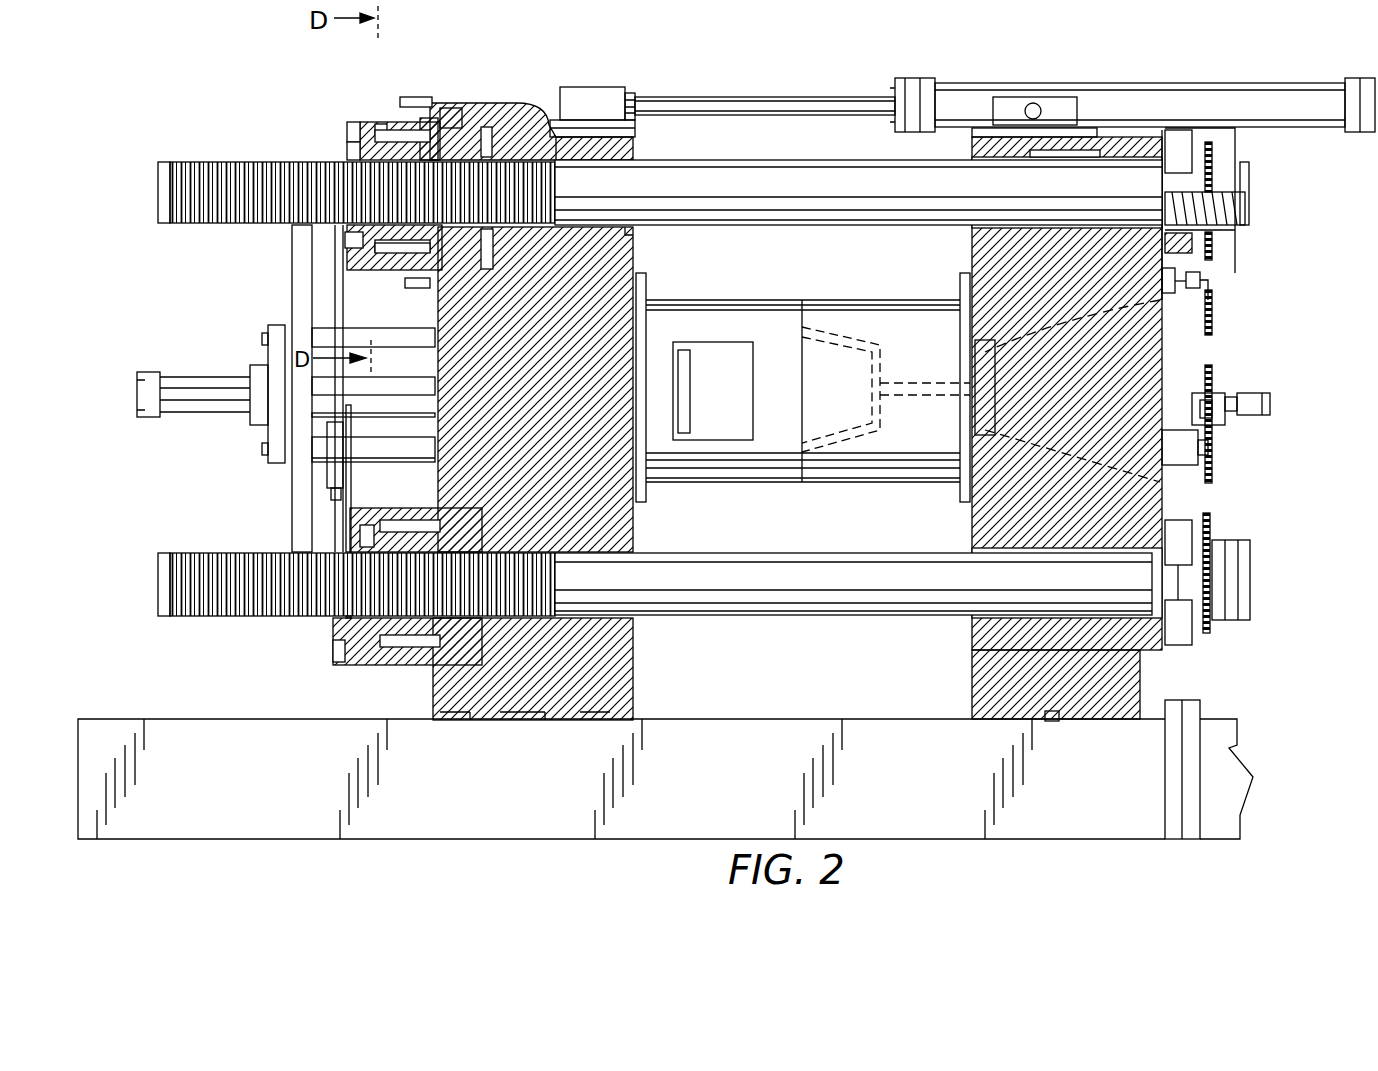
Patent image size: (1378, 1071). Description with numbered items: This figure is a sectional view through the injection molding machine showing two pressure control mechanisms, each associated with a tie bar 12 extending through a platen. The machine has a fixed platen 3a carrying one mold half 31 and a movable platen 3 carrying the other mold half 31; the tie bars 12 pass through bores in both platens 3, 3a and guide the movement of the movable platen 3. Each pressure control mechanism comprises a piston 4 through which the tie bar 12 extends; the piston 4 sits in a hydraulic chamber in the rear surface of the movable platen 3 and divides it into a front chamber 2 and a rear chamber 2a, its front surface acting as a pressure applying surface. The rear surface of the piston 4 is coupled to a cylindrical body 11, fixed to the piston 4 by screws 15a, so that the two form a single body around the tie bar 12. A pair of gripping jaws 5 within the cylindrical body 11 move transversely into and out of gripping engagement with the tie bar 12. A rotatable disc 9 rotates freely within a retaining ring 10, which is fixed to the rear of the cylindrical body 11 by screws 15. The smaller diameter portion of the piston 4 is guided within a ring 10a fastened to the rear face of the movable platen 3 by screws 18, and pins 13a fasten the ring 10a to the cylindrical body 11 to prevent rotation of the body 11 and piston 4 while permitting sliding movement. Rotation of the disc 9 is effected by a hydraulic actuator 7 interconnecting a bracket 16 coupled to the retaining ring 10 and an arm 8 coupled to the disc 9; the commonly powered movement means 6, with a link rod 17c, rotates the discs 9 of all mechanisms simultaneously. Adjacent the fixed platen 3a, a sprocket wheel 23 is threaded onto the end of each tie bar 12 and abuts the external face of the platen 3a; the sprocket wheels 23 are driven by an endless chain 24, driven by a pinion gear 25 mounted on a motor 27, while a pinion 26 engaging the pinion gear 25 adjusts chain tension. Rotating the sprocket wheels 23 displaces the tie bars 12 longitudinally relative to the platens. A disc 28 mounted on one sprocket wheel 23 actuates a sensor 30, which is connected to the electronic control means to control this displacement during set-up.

The front chamber 2 is at (538, 102).
The rear chamber 2a is at (470, 100).
The movable platen 3 is at (608, 250).
The fixed platen 3a is at (1058, 143).
The piston 4 is at (482, 124).
The gripping jaws 5 is at (345, 153).
The commonly powered movement means 6 is at (186, 480).
The hydraulic actuator 7 is at (333, 448).
The arm 8 is at (333, 648).
The rotatable disc 9 is at (343, 240).
The retaining ring 10 is at (357, 124).
The ring 10a is at (455, 118).
The cylindrical body 11 is at (381, 122).
The tie bar 12 is at (695, 185).
The pins 13a is at (400, 124).
The screws 15 is at (345, 134).
The screws 15a is at (160, 178).
The bracket 16 is at (327, 468).
The guide plate 17c is at (338, 303).
The screws 18 is at (433, 97).
The sprocket wheel 23 is at (1210, 172).
The endless chain 24 is at (1215, 382).
The pinion gear 25 is at (1208, 413).
The pinion 26 is at (1213, 446).
The motor 27 is at (1252, 413).
The disc 28 is at (1238, 246).
The sensor 30 is at (1215, 298).
The mold half 31 is at (840, 368).